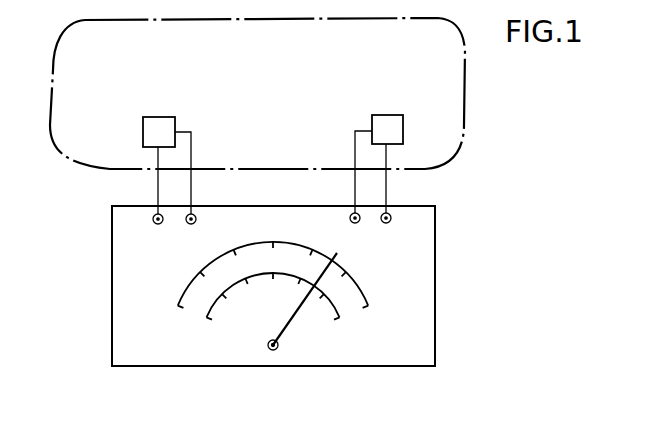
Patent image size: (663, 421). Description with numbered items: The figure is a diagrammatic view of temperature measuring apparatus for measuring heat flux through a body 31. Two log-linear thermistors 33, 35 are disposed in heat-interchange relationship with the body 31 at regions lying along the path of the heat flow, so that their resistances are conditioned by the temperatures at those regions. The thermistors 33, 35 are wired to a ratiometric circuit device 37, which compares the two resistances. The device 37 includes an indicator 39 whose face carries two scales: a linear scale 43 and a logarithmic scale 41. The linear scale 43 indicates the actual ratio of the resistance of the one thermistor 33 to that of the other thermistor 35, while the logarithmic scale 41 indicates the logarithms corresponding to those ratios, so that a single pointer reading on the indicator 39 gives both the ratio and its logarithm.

The body 31 is at (283, 58).
The thermistor 33 is at (387, 115).
The thermistor 35 is at (157, 117).
The ratiometric circuit device 37 is at (437, 292).
The indicator 39 is at (122, 353).
The logarithmic scale 41 is at (213, 313).
The linear scale 43 is at (372, 311).